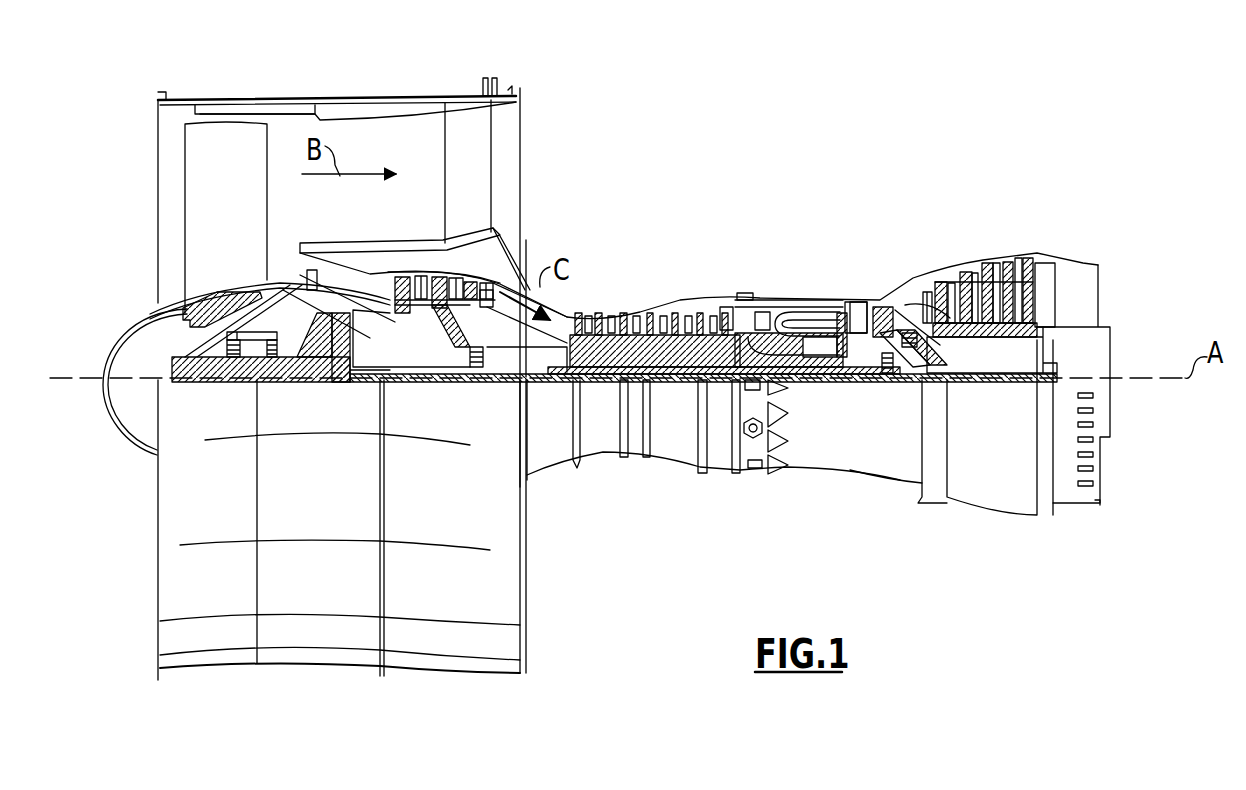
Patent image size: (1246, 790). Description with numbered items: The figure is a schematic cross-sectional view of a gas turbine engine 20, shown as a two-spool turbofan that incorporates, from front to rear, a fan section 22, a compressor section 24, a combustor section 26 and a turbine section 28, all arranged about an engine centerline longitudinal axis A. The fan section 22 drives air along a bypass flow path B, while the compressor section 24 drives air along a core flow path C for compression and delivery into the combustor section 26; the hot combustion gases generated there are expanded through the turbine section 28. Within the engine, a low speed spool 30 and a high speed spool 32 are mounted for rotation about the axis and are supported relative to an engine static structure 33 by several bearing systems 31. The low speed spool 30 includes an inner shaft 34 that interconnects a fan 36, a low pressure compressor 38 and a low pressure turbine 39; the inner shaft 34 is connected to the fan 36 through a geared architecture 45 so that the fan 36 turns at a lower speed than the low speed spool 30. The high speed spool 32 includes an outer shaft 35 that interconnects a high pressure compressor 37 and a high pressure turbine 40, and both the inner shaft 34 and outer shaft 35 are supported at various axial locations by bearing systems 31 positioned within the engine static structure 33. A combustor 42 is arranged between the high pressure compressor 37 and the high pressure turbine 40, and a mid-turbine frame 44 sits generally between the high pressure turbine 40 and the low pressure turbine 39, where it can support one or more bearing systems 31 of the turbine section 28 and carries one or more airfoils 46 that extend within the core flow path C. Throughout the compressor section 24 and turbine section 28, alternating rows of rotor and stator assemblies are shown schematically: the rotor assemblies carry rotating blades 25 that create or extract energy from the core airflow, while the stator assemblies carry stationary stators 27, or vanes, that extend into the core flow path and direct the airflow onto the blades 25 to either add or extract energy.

The gas turbine engine 20 is at (806, 143).
The fan section 22 is at (268, 86).
The compressor section 24 is at (570, 282).
The rotating blades 25 is at (400, 280).
The combustor section 26 is at (796, 268).
The stators 27 is at (422, 285).
The turbine section 28 is at (948, 228).
The low speed spool 30 is at (677, 392).
The bearing systems 31 is at (250, 353).
The high speed spool 32 is at (712, 345).
The engine static structure 33 is at (716, 470).
The inner shaft 34 is at (537, 385).
The outer shaft 35 is at (808, 372).
The fan 36 is at (242, 226).
The high pressure compressor 37 is at (651, 353).
The low pressure compressor 38 is at (492, 233).
The low pressure turbine 39 is at (983, 270).
The high pressure turbine 40 is at (862, 302).
The combustor 42 is at (790, 325).
The mid-turbine frame 44 is at (908, 283).
The geared architecture 45 is at (343, 353).
The airfoils 46 is at (917, 322).